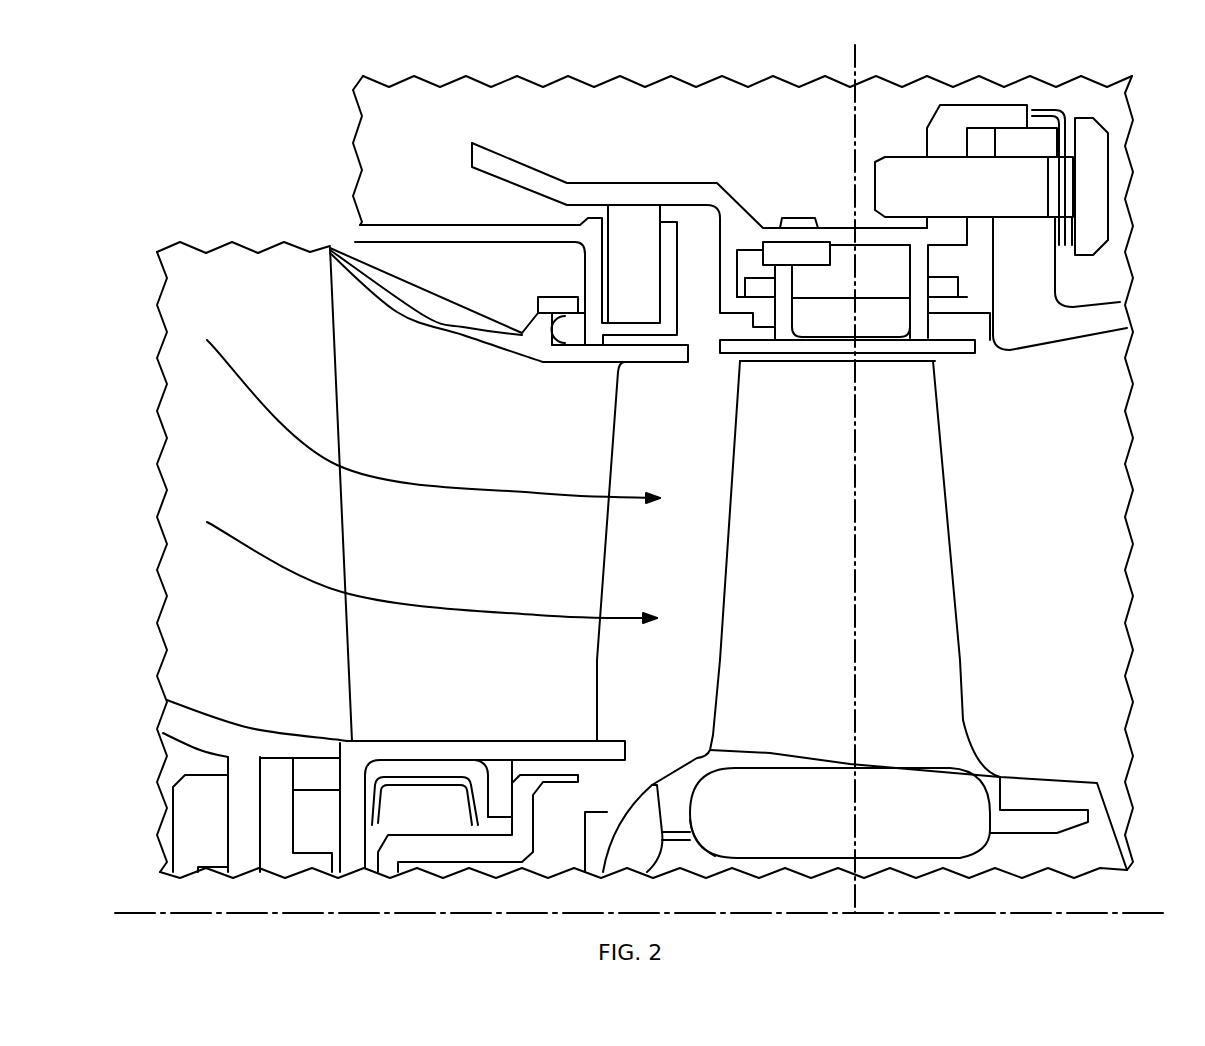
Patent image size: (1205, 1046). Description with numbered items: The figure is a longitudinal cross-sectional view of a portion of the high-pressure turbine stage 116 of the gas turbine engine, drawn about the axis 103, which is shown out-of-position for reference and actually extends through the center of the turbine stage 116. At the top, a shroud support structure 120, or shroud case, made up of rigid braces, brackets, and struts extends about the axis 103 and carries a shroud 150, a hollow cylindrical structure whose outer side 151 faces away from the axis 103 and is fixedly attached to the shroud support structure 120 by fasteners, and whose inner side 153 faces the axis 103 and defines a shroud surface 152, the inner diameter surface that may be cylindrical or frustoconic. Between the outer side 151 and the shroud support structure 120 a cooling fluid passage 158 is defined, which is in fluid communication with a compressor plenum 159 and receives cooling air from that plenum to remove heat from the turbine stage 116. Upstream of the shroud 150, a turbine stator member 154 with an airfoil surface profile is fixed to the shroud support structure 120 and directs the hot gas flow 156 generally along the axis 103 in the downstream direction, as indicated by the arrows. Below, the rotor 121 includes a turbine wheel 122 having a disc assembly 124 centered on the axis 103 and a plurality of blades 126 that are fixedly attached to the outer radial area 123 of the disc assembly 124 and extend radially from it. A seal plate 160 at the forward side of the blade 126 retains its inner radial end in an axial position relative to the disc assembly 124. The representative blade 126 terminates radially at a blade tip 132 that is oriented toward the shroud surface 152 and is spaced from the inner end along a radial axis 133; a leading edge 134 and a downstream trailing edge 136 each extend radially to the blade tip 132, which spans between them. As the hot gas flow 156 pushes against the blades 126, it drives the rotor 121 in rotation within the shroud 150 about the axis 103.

The axis 103 is at (1152, 913).
The high-pressure turbine stage 116 is at (292, 130).
The shroud support structure 120 is at (840, 240).
The rotor 121 is at (918, 490).
The turbine wheel 122 is at (953, 755).
The outer radial area 123 is at (760, 855).
The disc assembly 124 is at (963, 858).
The blade 126 is at (902, 565).
The blade tip 132 is at (812, 355).
The radial axis 133 is at (858, 667).
The leading edge 134 is at (887, 616).
The trailing edge 136 is at (963, 635).
The shroud 150 is at (977, 353).
The outer side 151 is at (928, 280).
The shroud surface 152 is at (875, 360).
The inner side 153 is at (727, 343).
The turbine stator member 154 is at (358, 527).
The hot gas flow 156 is at (537, 493).
The cooling fluid passage 158 is at (900, 284).
The compressor plenum 159 is at (570, 102).
The seal plate 160 is at (617, 820).